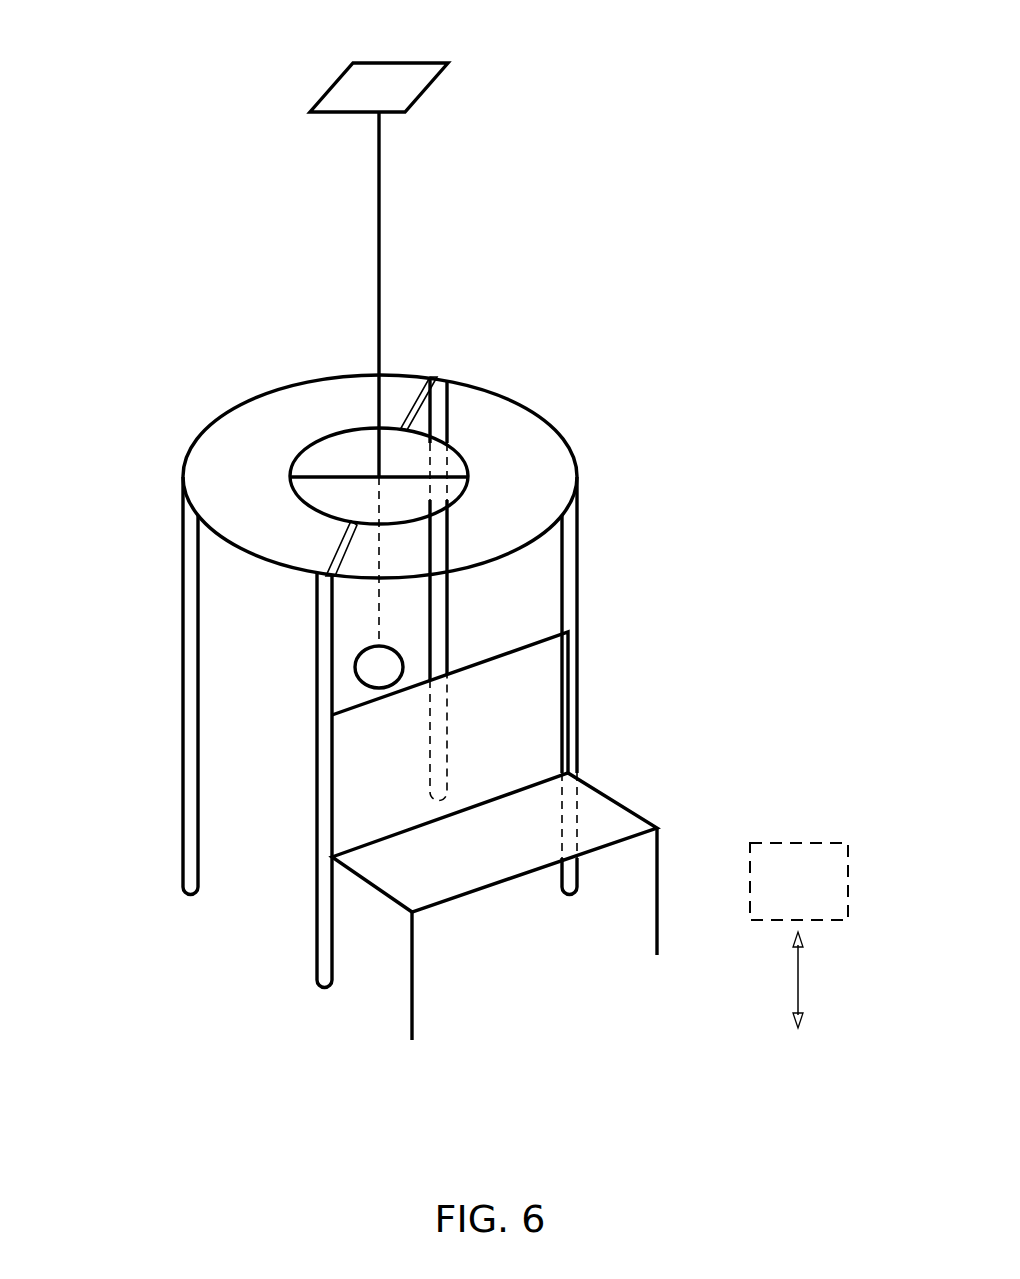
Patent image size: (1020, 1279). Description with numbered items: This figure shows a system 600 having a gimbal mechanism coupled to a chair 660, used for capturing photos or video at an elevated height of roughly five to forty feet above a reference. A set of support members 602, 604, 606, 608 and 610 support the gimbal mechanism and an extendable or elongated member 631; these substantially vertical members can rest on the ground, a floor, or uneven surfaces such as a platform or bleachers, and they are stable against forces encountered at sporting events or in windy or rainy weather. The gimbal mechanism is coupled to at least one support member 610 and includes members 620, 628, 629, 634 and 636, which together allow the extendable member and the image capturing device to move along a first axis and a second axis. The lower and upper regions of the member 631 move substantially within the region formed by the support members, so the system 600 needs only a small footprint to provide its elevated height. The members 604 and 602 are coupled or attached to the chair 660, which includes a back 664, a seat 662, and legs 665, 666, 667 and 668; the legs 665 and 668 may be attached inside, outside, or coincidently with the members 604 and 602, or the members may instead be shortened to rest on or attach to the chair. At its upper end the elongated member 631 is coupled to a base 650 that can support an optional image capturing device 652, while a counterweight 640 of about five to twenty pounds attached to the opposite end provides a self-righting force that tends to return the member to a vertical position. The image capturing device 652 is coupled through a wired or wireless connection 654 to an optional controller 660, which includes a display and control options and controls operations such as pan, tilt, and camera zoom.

The system 600 is at (750, 67).
The support member 602 is at (578, 680).
The support member 604 is at (315, 685).
The support member 606 is at (180, 688).
The support member 608 is at (450, 621).
The support member 610 is at (500, 388).
The gimbal member 620 is at (460, 448).
The gimbal member 628 is at (330, 547).
The gimbal member 629 is at (413, 381).
The elongated member 631 is at (412, 233).
The gimbal member 634 is at (400, 478).
The gimbal member 636 is at (328, 475).
The counterweight 640 is at (402, 655).
The base 650 is at (432, 84).
The image capturing device 652 is at (799, 881).
The wired or wireless connection 654 is at (799, 982).
The chair 660 is at (465, 913).
The seat 662 is at (615, 803).
The back 664 is at (450, 703).
The chair leg 665 is at (315, 956).
The chair leg 666 is at (410, 1003).
The chair leg 667 is at (658, 889).
The chair leg 668 is at (578, 876).